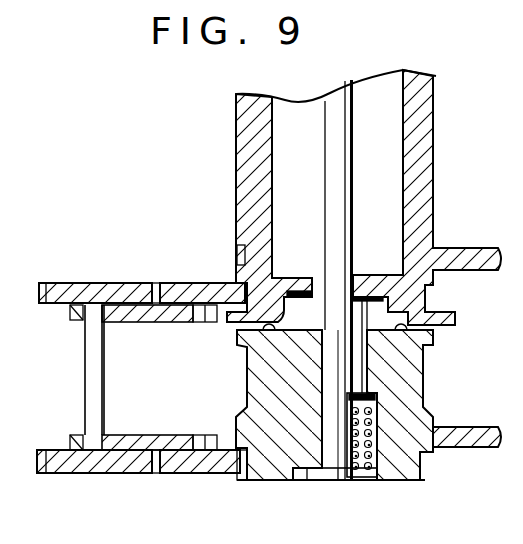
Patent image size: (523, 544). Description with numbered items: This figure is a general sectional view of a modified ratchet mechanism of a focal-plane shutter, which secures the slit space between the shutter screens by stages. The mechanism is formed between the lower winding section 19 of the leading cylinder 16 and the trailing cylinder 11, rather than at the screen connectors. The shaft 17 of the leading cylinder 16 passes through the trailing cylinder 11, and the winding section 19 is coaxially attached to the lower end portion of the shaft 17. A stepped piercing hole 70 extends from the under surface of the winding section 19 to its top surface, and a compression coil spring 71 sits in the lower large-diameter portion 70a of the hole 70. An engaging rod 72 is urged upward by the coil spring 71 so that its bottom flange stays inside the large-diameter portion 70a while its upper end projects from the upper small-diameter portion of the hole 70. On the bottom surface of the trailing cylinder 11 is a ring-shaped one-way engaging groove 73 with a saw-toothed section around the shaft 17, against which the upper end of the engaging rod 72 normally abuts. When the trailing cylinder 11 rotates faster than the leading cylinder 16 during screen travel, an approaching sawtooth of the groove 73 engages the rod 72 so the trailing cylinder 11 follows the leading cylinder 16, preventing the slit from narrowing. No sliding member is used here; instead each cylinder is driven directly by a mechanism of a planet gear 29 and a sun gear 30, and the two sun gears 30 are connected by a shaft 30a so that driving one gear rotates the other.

The trailing cylinder 11 is at (431, 118).
The leading cylinder 16 is at (349, 75).
The shaft 17 is at (342, 176).
The winding section 19 is at (415, 403).
The planet gear 29 is at (192, 283).
The sun gear 30 is at (121, 283).
The shaft 30a is at (100, 385).
The stepped piercing hole 70 is at (385, 482).
The large-diameter portion 70a is at (378, 413).
The compression coil spring 71 is at (358, 470).
The engaging rod 72 is at (368, 350).
The one-way engaging groove 73 is at (352, 285).